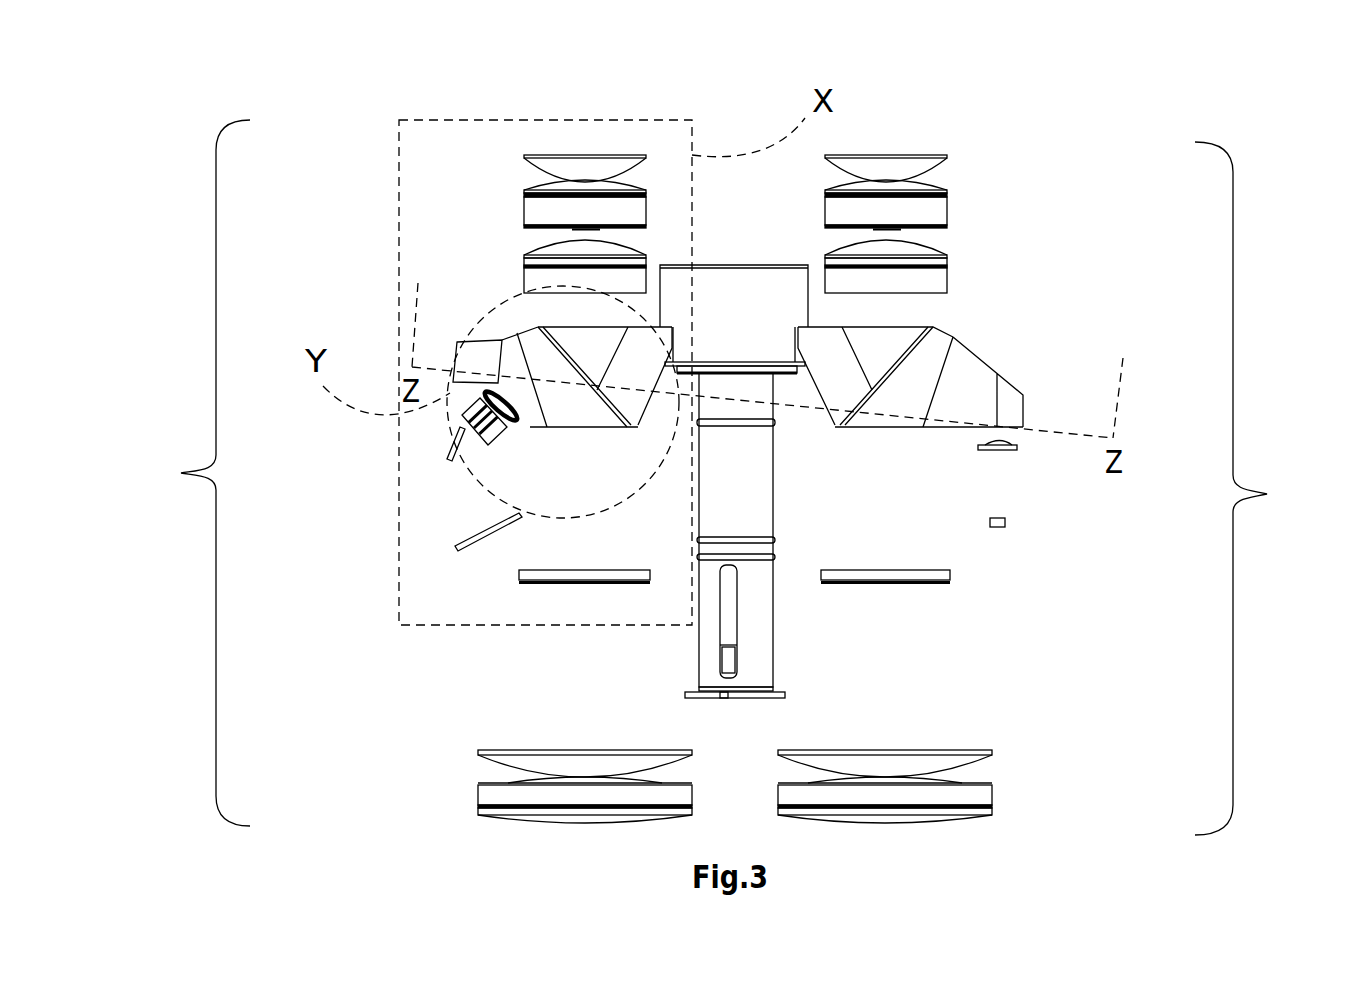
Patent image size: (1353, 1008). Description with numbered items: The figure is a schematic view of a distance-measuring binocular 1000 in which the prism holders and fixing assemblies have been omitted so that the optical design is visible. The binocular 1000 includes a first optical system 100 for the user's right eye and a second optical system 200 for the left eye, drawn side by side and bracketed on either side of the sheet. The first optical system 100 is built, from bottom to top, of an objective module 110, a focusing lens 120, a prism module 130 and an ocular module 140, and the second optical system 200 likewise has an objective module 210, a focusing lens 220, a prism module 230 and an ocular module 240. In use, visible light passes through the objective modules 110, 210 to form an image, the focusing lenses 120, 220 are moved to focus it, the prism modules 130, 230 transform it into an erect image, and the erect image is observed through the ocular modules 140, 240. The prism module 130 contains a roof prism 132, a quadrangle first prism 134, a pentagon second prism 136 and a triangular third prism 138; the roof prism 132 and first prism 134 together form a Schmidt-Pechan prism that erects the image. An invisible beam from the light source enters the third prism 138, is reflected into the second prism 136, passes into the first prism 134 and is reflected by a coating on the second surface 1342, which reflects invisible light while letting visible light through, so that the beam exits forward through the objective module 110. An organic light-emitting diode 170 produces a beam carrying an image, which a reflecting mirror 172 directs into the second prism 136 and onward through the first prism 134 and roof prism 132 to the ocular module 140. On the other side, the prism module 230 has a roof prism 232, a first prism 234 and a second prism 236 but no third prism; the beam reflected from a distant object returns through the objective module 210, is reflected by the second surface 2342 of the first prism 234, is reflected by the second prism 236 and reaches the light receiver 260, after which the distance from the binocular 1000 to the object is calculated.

The binocular 1000 is at (148, 59).
The first optical system 100 is at (188, 473).
The second optical system 200 is at (1263, 488).
The objective module 110 is at (479, 797).
The focusing lens 120 is at (519, 583).
The prism module 130 is at (503, 306).
The roof prism 132 is at (630, 427).
The first prism 134 is at (587, 427).
The second prism 136 is at (530, 408).
The third prism 138 is at (470, 360).
The ocular module 140 is at (492, 191).
The organic light-emitting diode 170 is at (455, 548).
The reflecting mirror 172 is at (452, 440).
The second surface 1342 is at (535, 330).
The objective module 210 is at (993, 797).
The focusing lens 220 is at (940, 585).
The prism module 230 is at (1010, 351).
The roof prism 232 is at (835, 427).
The first prism 234 is at (897, 427).
The second prism 236 is at (955, 427).
The ocular module 240 is at (982, 203).
The light receiver 260 is at (998, 527).
The second surface 2342 is at (924, 350).